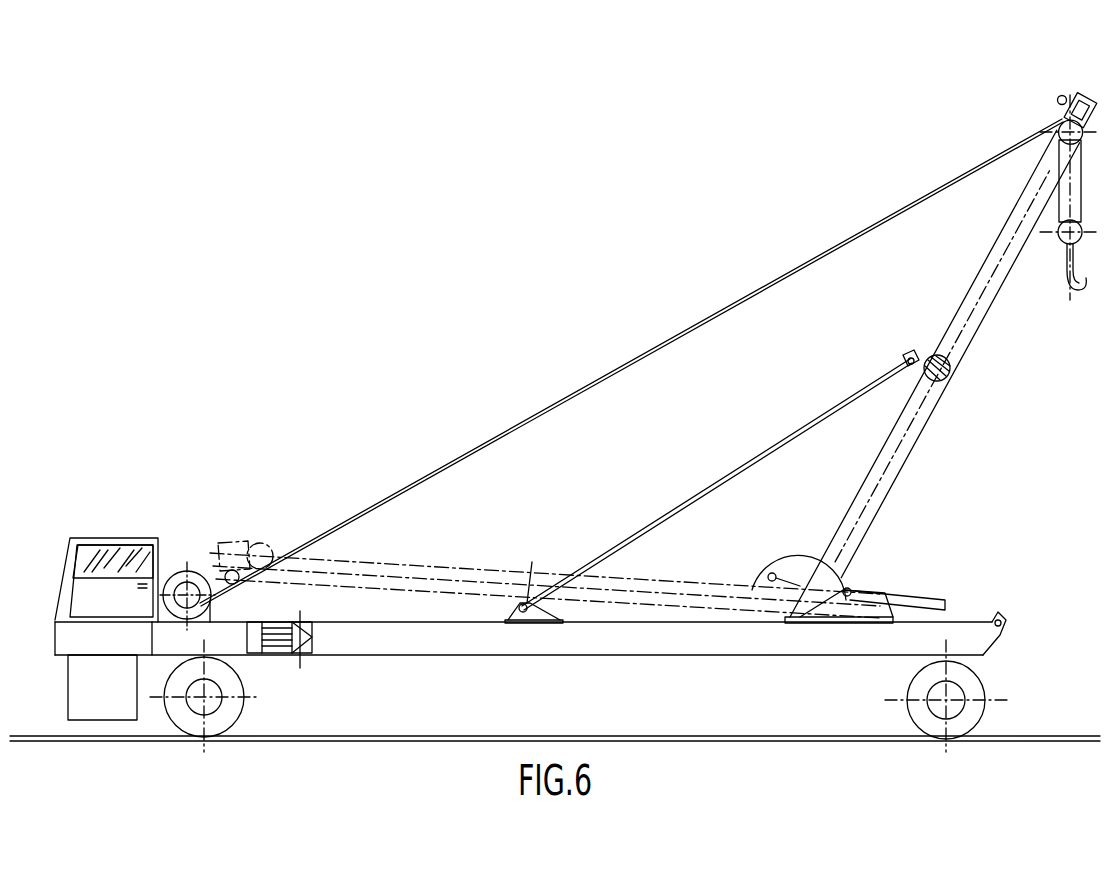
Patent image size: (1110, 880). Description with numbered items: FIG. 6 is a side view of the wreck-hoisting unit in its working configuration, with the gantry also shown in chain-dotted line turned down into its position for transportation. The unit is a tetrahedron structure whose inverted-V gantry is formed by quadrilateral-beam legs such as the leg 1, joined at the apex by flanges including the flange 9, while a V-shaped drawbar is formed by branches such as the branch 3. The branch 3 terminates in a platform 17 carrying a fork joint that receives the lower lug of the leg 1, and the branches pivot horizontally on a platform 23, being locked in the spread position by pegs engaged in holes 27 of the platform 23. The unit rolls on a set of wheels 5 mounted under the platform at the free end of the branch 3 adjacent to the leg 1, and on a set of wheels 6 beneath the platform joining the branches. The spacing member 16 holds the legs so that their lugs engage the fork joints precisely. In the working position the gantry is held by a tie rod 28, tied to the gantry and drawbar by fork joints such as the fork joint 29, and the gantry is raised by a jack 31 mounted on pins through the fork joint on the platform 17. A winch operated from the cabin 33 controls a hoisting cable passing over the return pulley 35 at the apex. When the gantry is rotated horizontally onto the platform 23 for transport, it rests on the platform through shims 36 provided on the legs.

The leg 1 is at (418, 541).
The branch 3 is at (402, 640).
The set of wheels 5 is at (916, 712).
The set of wheels 6 is at (228, 712).
The flange 9 is at (1086, 87).
The spacing member 16 is at (933, 383).
The platform 17 is at (982, 654).
The platform 23 is at (229, 643).
The hole 27 is at (268, 626).
The tie rod 28 is at (726, 478).
The fork joint 29 is at (509, 616).
The jack 31 is at (910, 597).
The cabin 33 is at (122, 537).
The return pulley 35 is at (1063, 147).
The shim 36 is at (224, 574).